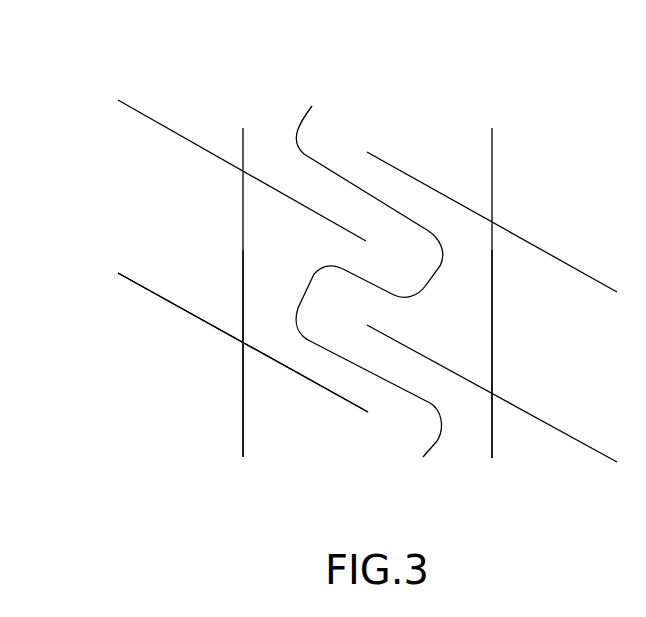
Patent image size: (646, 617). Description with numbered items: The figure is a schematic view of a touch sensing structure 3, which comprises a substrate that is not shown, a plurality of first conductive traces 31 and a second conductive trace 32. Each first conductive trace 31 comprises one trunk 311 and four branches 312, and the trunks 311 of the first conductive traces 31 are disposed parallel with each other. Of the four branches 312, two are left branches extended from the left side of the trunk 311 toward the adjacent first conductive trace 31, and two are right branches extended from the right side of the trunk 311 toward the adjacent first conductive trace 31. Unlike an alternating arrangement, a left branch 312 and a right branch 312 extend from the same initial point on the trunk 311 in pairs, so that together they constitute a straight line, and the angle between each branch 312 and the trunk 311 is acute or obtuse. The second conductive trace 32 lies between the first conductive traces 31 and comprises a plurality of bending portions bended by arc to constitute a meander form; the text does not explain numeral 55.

The touch sensing structure 3 is at (641, 58).
The first conductive trace 31 is at (245, 152).
The trunk 311 is at (243, 255).
The branch 312 is at (167, 128).
The second conductive trace 32 is at (300, 122).
The guide fin 55 is at (170, 305).